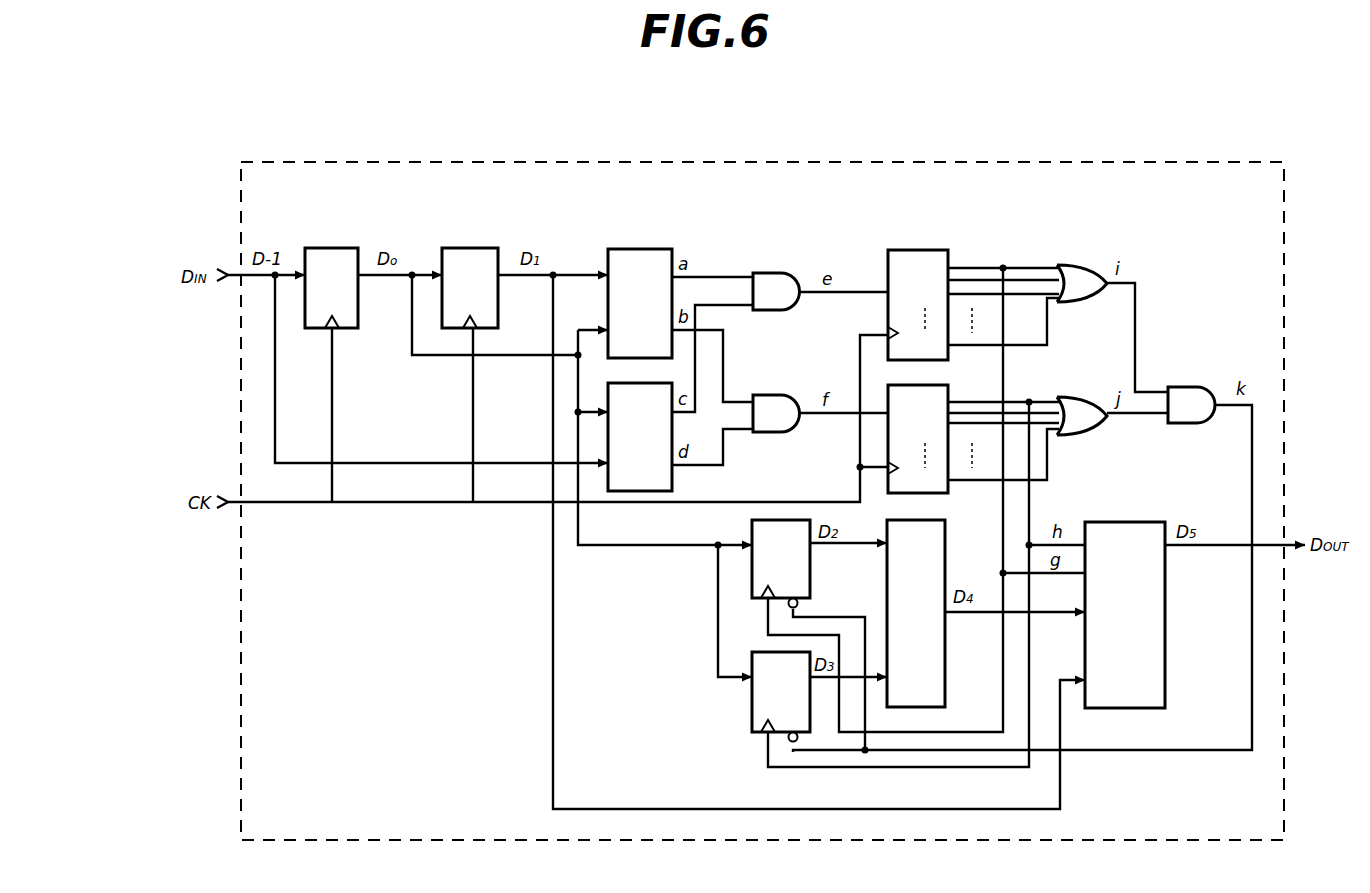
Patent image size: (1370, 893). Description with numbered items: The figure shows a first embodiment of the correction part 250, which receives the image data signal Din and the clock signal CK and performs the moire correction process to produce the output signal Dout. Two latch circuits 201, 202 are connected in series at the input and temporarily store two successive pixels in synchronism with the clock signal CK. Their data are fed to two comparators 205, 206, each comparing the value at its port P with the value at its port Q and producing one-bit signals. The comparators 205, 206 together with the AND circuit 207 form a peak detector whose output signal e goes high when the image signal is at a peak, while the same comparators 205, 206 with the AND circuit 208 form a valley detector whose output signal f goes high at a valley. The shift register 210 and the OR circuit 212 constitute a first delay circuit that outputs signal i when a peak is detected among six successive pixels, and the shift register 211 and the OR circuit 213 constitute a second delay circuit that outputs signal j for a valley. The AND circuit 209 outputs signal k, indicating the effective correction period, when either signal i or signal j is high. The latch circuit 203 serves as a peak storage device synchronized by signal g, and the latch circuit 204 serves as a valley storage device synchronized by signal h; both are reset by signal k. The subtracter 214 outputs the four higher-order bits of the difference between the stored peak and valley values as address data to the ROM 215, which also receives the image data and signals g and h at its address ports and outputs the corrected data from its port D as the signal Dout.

The latch circuit 201 is at (326, 247).
The latch circuit 202 is at (463, 247).
The latch circuit 203 is at (812, 590).
The latch circuit 204 is at (748, 703).
The comparator 205 is at (648, 228).
The comparator 206 is at (674, 483).
The AND circuit 207 is at (775, 272).
The AND circuit 208 is at (767, 394).
The AND circuit 209 is at (1183, 386).
The 6-bit shift register 210 is at (918, 230).
The 6-bit shift register 211 is at (928, 385).
The 6-input OR circuit 212 is at (1075, 264).
The 6-input OR circuit 213 is at (1072, 396).
The subtracter 214 is at (950, 545).
The ROM 215 is at (1102, 521).
The correction part 250 is at (988, 158).